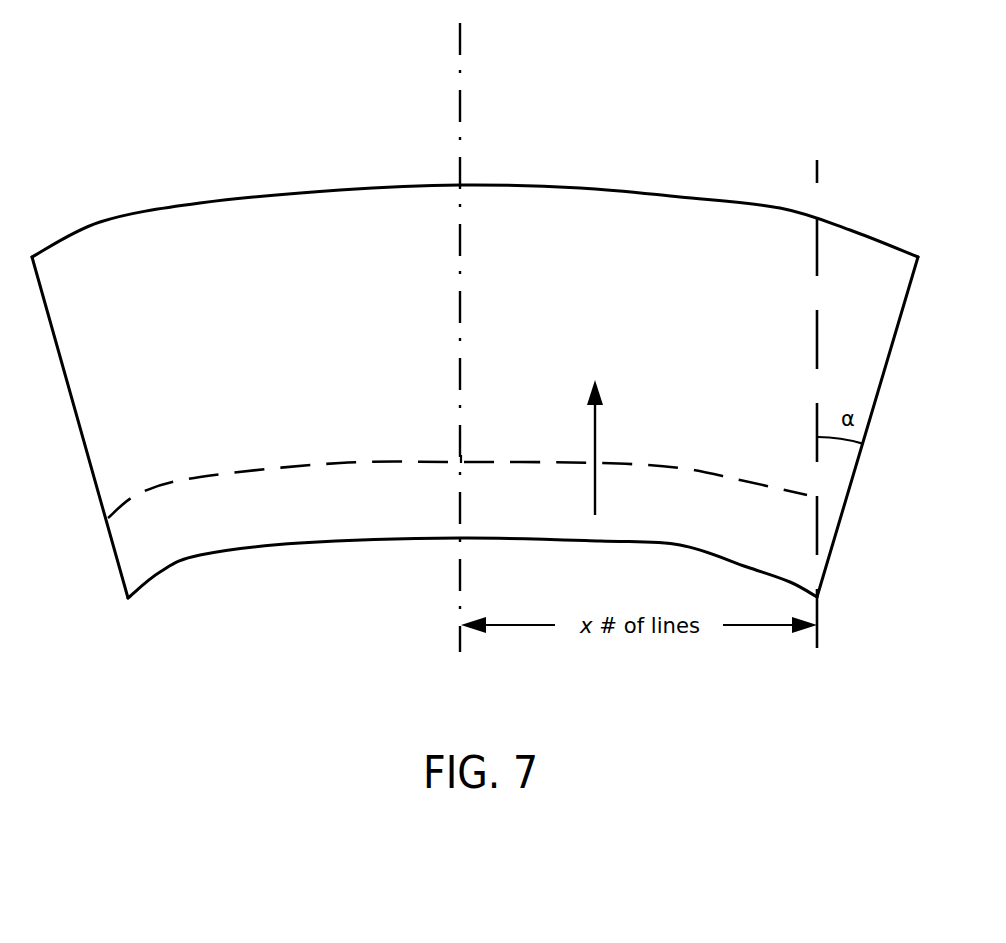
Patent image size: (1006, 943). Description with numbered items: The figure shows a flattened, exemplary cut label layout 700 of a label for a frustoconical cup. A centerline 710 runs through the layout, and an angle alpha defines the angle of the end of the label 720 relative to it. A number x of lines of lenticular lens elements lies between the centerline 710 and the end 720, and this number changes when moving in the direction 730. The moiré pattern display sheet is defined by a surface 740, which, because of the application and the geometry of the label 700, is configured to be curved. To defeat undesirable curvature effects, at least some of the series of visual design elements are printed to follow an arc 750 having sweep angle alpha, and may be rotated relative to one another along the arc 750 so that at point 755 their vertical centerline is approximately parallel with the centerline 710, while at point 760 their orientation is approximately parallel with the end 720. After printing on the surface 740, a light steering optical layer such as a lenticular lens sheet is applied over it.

The cut label layout 700 is at (700, 177).
The centerline 710 is at (460, 138).
The end of the label 720 is at (890, 357).
The direction 730 is at (620, 447).
The surface 740 is at (255, 393).
The arc 750 is at (343, 462).
The point 755 is at (461, 462).
The point 760 is at (818, 498).